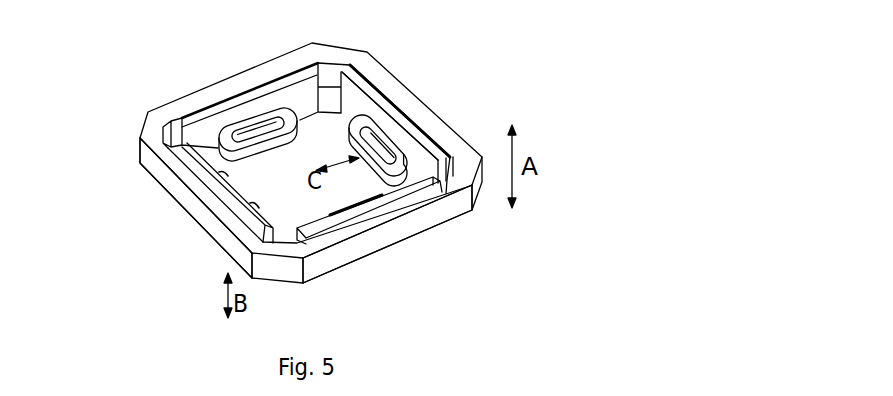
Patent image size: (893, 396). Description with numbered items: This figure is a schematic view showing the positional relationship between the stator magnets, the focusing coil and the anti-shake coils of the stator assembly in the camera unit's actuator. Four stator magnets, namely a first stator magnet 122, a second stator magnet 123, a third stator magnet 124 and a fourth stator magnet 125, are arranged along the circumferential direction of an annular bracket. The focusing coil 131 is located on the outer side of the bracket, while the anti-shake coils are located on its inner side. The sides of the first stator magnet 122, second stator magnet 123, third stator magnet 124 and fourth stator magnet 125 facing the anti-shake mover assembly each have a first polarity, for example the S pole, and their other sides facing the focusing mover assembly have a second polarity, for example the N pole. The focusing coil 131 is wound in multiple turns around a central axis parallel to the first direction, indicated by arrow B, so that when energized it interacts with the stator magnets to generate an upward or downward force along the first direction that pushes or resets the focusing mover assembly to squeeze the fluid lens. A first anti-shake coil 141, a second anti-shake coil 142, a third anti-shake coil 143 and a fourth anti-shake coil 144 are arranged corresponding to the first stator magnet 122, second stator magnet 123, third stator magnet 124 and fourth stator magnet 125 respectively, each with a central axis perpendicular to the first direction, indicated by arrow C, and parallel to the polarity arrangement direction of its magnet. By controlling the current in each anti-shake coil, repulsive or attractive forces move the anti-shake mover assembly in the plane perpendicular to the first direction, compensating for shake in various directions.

The first stator magnet 122 is at (181, 118).
The second stator magnet 123 is at (178, 157).
The third stator magnet 124 is at (422, 192).
The fourth stator magnet 125 is at (368, 94).
The focusing coil 131 is at (227, 77).
The first anti-shake coil 141 is at (265, 110).
The second anti-shake coil 142 is at (240, 200).
The third anti-shake coil 143 is at (350, 208).
The fourth anti-shake coil 144 is at (391, 139).